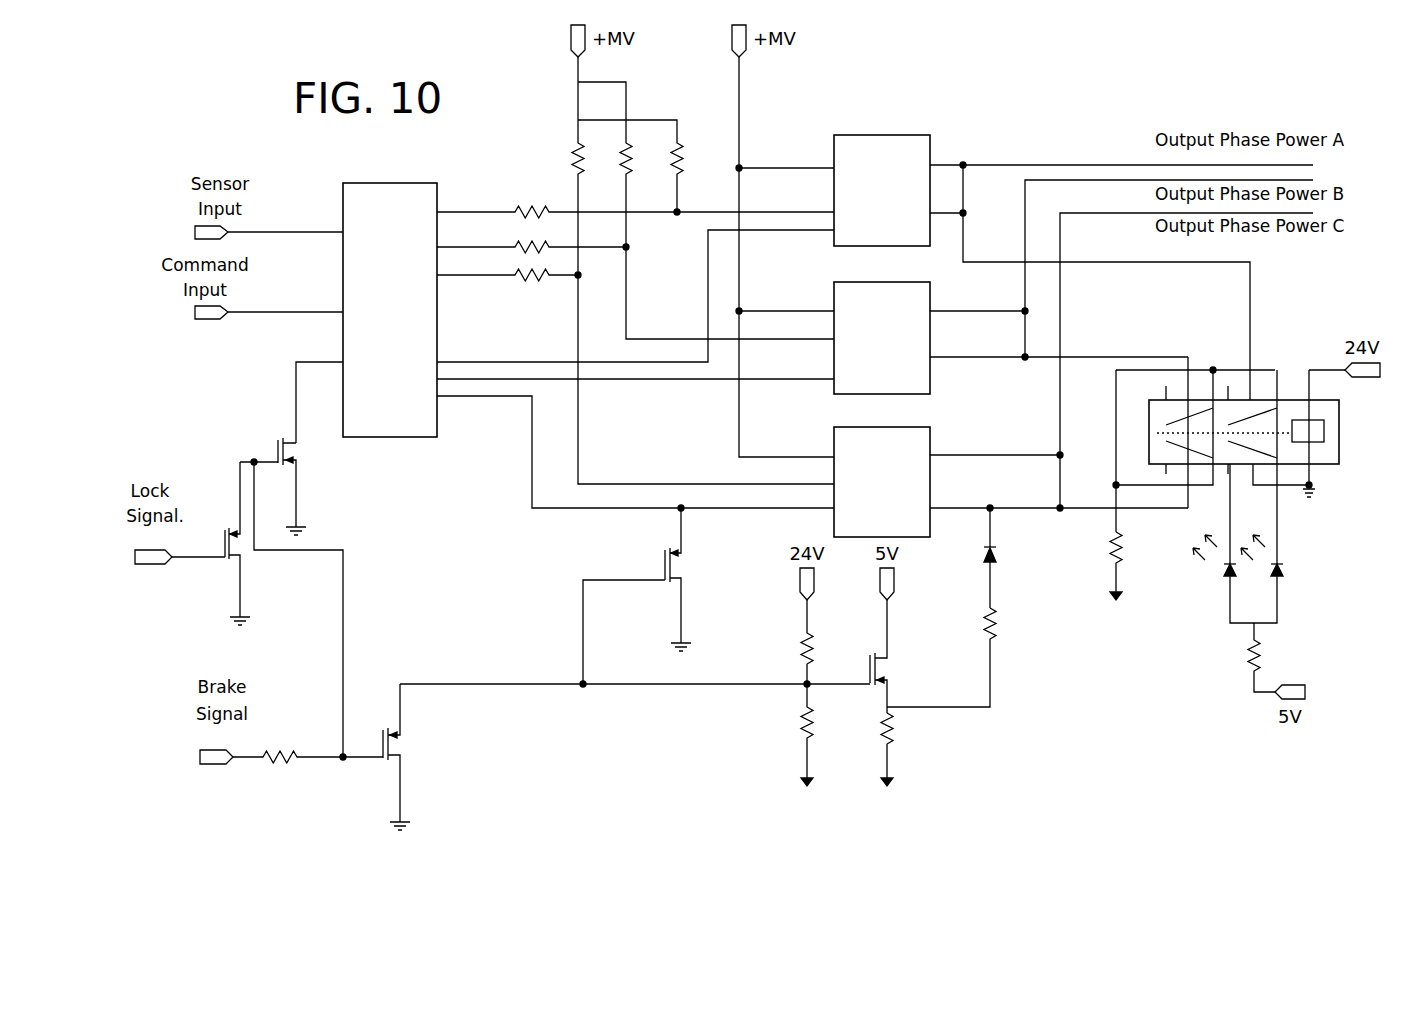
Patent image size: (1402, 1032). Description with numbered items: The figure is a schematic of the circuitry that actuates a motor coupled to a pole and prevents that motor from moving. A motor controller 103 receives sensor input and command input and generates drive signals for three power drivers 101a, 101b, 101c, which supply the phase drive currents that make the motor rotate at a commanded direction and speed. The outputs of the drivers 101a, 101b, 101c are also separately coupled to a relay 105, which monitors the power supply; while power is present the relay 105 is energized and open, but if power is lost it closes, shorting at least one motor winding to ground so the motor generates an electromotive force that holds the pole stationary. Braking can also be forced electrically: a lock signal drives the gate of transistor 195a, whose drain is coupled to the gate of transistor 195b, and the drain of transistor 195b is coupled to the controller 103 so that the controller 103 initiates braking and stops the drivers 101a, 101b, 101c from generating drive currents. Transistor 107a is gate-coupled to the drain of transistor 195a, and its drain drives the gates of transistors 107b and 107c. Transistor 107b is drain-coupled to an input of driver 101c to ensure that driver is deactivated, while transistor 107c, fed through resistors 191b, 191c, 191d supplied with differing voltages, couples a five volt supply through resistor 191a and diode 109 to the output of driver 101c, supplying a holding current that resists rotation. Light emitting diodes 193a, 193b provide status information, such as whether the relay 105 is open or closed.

The motor controller 103 is at (390, 310).
The driver 101a is at (882, 190).
The driver 101b is at (882, 338).
The driver 101c is at (882, 482).
The relay 105 is at (1330, 466).
The transistor 107a is at (393, 761).
The transistor 107b is at (672, 585).
The transistor 107c is at (890, 655).
The diode 109 is at (997, 560).
The resistor 191a is at (997, 628).
The resistor 191b is at (805, 650).
The resistor 191c is at (805, 713).
The resistor 191d is at (890, 725).
The light emitting diode 193a is at (1227, 574).
The light emitting diode 193b is at (1281, 574).
The transistor 195a is at (233, 561).
The transistor 195b is at (298, 459).